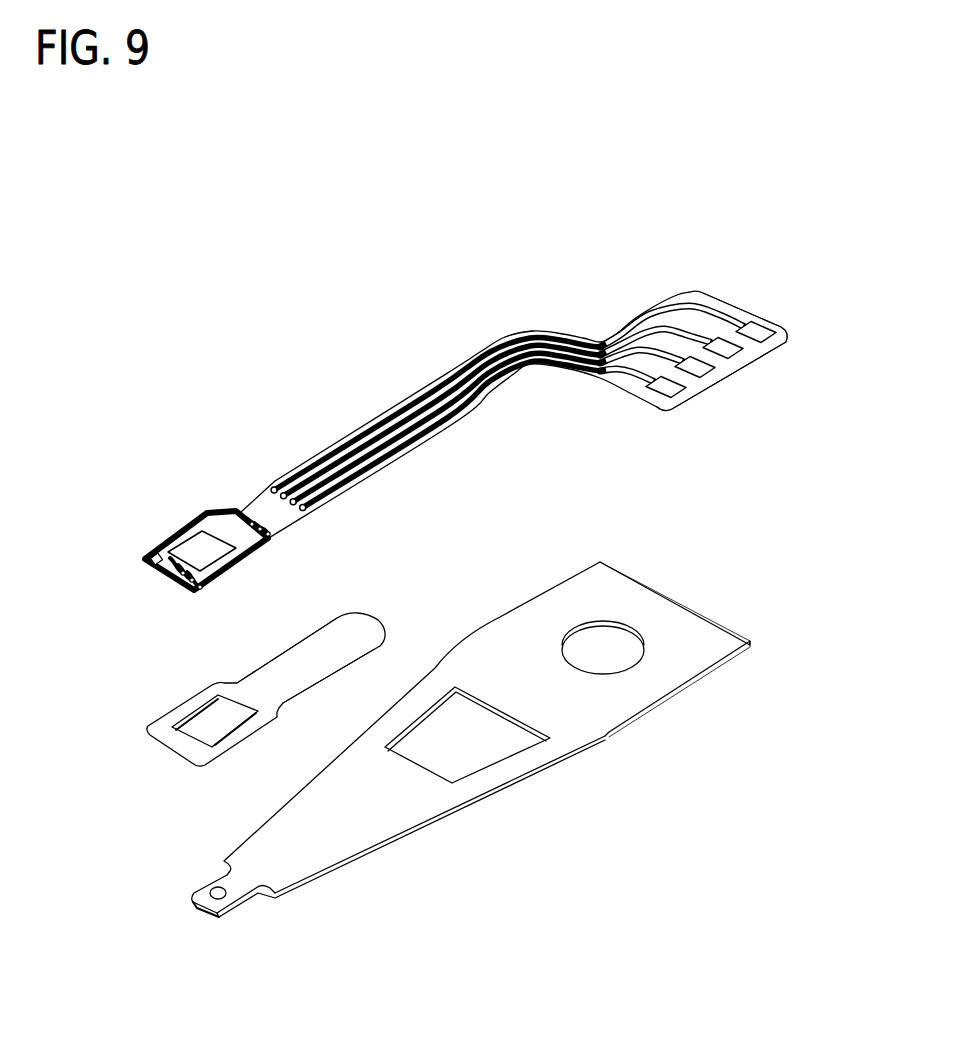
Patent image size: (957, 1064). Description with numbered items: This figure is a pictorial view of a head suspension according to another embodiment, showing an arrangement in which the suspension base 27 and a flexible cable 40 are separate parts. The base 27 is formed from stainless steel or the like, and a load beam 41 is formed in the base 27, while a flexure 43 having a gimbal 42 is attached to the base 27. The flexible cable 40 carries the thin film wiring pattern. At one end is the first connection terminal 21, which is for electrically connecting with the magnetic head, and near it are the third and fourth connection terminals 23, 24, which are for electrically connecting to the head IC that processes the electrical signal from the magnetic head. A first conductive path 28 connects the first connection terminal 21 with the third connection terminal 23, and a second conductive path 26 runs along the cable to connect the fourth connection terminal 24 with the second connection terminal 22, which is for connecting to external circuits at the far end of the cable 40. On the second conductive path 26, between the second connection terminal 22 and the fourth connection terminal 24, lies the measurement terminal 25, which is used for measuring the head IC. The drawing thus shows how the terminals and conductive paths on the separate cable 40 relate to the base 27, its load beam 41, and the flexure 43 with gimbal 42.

The first connection terminal 21 is at (147, 555).
The second connection terminal 22 is at (663, 392).
The third connection terminal 23 is at (247, 508).
The fourth connection terminal 24 is at (277, 485).
The measurement terminal 25 is at (523, 362).
The second conductive path 26 is at (362, 468).
The suspension base 27 is at (695, 687).
The first conductive path 28 is at (240, 568).
The flexible cable 40 is at (743, 297).
The load beam 41 is at (513, 782).
The gimbal 42 is at (168, 753).
The flexure 43 is at (263, 663).